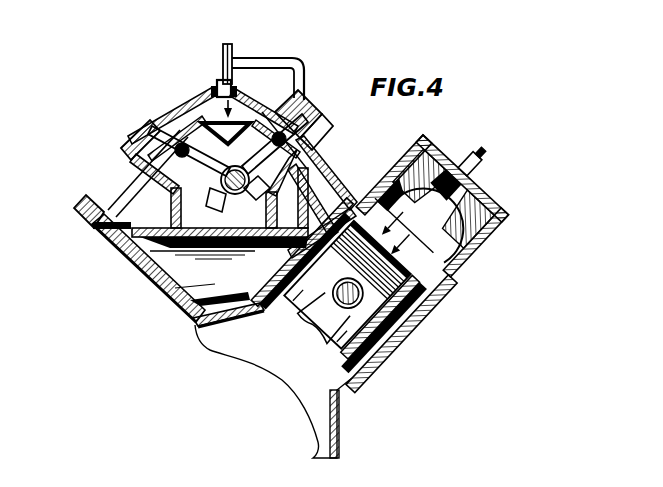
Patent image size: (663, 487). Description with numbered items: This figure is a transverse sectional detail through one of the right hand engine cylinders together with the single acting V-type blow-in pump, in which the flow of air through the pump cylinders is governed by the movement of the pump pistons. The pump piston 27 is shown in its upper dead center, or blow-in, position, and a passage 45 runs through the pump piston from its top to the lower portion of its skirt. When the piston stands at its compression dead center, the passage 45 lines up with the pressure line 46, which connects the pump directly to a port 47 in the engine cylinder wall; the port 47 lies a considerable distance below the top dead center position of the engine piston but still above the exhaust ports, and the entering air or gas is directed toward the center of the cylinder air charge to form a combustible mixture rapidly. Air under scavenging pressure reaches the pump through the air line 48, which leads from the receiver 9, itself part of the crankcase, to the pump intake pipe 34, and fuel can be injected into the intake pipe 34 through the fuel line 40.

The receiver 9 is at (218, 322).
The pump piston 27 is at (306, 122).
The intake pipe 34 is at (210, 96).
The fuel line 40 is at (224, 58).
The passage 45 is at (319, 136).
The pressure line 46 is at (352, 208).
The port 47 is at (357, 206).
The air line 48 is at (273, 58).